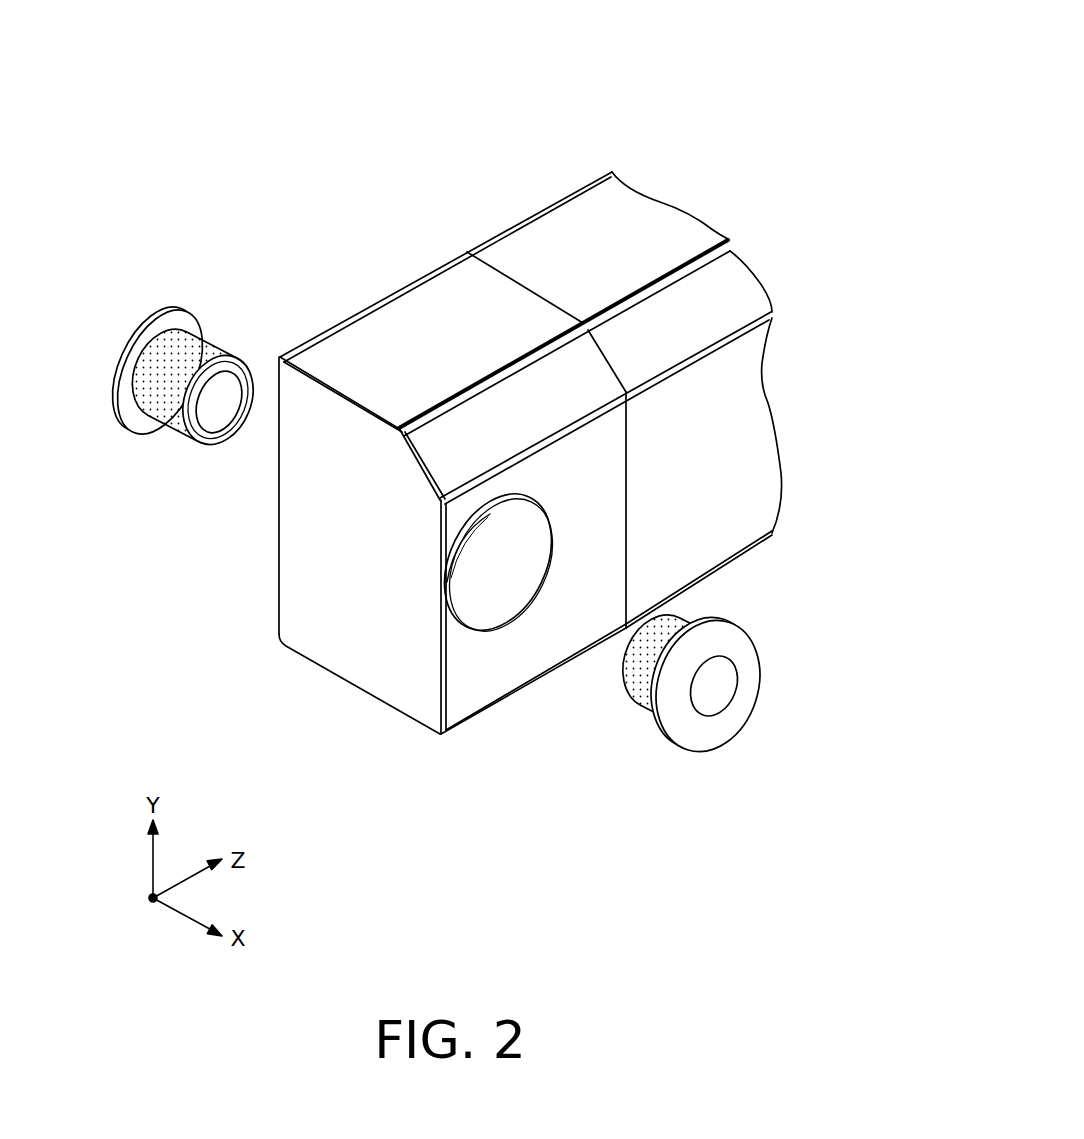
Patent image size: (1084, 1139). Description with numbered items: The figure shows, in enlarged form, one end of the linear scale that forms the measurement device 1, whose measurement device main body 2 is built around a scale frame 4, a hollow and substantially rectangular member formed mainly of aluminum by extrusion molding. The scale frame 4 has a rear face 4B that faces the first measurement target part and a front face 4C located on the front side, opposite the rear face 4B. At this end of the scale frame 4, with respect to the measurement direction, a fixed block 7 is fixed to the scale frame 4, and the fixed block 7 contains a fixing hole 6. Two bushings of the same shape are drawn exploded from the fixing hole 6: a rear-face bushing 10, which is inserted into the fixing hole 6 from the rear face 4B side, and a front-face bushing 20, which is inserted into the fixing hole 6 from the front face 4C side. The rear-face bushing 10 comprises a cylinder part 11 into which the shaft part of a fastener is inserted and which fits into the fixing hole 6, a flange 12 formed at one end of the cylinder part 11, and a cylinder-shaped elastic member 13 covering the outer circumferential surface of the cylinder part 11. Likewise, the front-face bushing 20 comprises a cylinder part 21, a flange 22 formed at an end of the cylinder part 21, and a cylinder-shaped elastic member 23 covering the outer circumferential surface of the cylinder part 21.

The measurement device 1 is at (704, 114).
The measurement device main body 2 is at (562, 160).
The scale frame 4 is at (525, 243).
The rear face 4B is at (550, 203).
The front face 4C is at (733, 533).
The fixing hole 6 is at (530, 542).
The fixed block 7 is at (352, 335).
The rear-face bushing 10 is at (197, 294).
The cylinder part 11 is at (232, 432).
The flange 12 is at (134, 357).
The elastic member 13 is at (230, 352).
The front-face bushing 20 is at (697, 763).
The cylinder part 21 is at (722, 690).
The flange 22 is at (750, 640).
The elastic member 23 is at (641, 698).